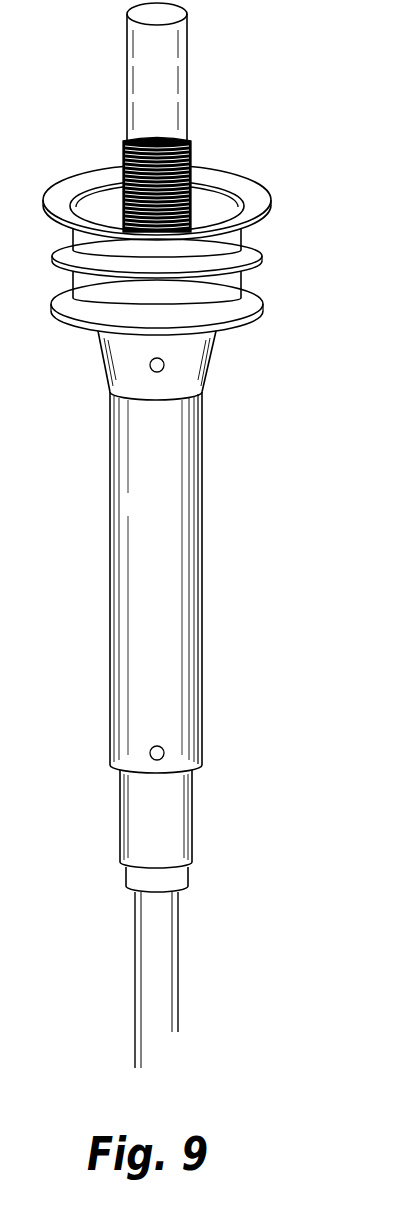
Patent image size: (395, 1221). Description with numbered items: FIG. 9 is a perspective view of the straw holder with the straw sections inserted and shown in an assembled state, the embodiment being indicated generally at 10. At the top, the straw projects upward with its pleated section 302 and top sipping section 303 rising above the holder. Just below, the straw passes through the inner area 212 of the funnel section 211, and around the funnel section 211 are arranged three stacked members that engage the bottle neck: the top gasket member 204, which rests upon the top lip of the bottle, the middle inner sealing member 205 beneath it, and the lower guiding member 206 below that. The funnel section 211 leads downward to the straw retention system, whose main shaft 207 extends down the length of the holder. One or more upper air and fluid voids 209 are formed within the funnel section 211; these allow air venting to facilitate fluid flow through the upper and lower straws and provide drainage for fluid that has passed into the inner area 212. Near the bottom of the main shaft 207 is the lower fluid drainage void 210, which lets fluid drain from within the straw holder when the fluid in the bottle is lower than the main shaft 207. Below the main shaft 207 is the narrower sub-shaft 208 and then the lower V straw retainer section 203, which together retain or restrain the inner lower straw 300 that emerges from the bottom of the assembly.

The straw holder and straw assembly 10 is at (252, 538).
The lower V straw retainer section 203 is at (174, 876).
The top gasket member 204 is at (270, 217).
The middle inner sealing member 205 is at (263, 255).
The lower guiding member 206 is at (263, 307).
The main shaft section 207 is at (176, 542).
The sub-shaft 208 is at (193, 798).
The upper air and fluid void 209 is at (149, 364).
The lower fluid drainage void 210 is at (150, 757).
The funnel section 211 is at (212, 360).
The inner area of the funnel section 212 is at (102, 200).
The inner lower straw 300 is at (165, 977).
The pleated section 302 is at (193, 167).
The top sipping section 303 is at (187, 49).